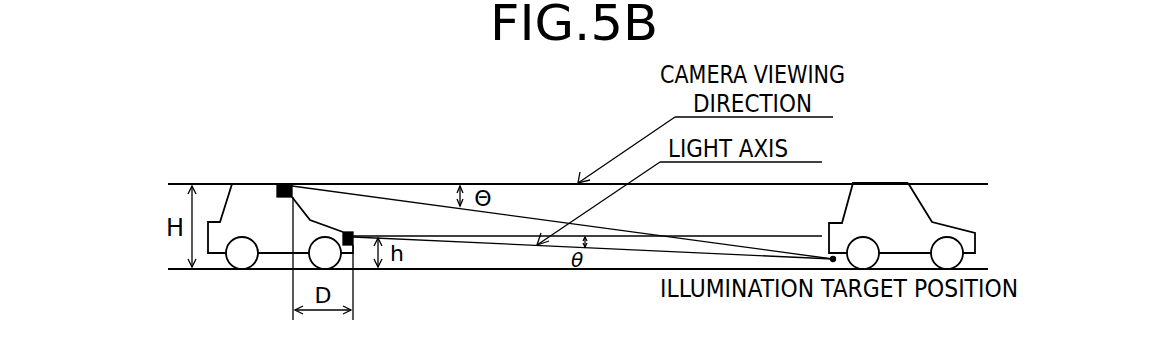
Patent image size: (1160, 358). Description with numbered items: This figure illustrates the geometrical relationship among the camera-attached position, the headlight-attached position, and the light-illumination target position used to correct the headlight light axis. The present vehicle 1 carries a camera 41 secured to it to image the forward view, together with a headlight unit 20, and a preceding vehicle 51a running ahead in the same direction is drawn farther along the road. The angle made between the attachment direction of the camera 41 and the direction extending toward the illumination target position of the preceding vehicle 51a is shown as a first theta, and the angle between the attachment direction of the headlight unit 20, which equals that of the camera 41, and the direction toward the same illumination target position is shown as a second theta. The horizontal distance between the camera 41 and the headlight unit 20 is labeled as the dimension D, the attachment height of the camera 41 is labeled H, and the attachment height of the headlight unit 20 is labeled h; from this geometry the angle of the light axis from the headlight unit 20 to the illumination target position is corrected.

The vehicle 1 is at (340, 166).
The camera 41 is at (290, 183).
The headlight unit 20 is at (354, 233).
The preceding vehicle 51a is at (895, 170).